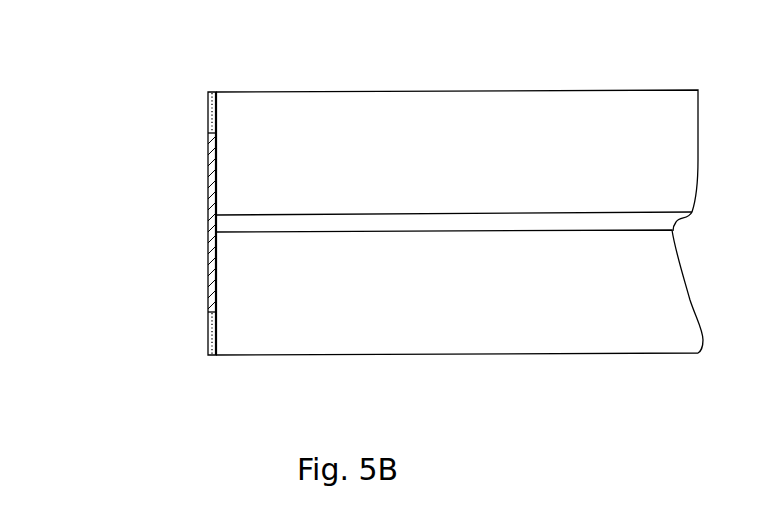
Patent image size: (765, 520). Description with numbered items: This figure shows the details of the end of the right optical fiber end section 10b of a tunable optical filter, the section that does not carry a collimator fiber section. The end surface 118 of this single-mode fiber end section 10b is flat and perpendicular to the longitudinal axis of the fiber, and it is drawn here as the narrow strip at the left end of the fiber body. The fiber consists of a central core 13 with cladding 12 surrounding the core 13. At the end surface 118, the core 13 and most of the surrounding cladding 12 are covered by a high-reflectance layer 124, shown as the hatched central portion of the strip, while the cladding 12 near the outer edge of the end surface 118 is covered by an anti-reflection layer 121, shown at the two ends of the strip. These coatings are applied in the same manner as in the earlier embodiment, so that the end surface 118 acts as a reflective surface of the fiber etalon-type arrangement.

The optical fiber end section 10b is at (290, 396).
The cladding 12 is at (493, 335).
The core 13 is at (507, 220).
The end surface 118 is at (128, 167).
The anti-reflection layer 121 is at (208, 112).
The high-reflectance layer 124 is at (209, 207).